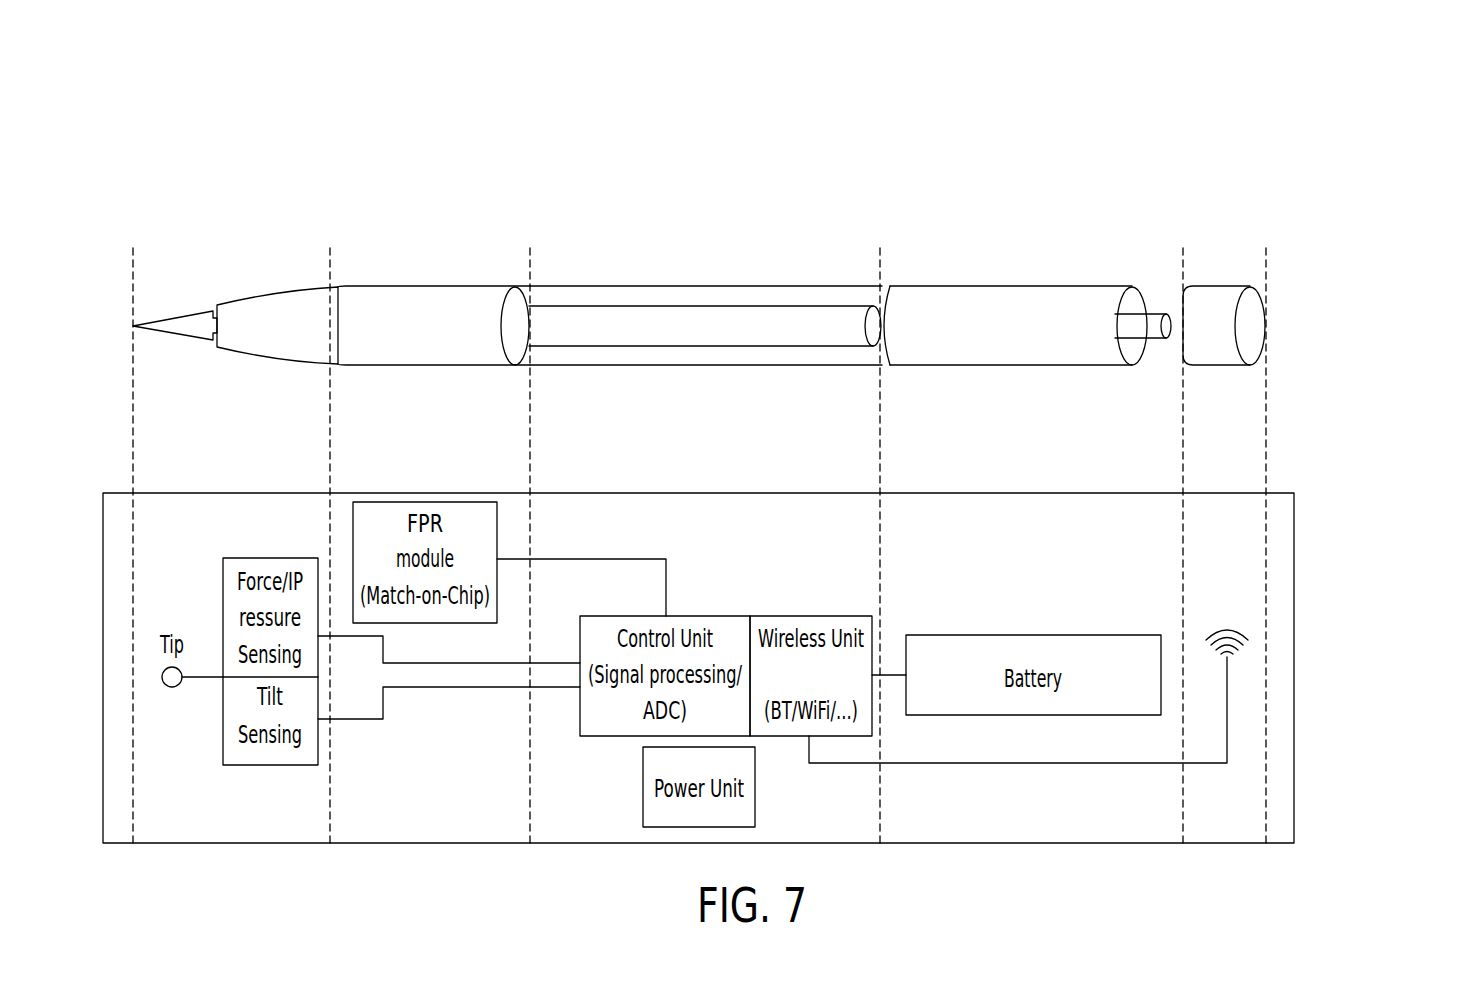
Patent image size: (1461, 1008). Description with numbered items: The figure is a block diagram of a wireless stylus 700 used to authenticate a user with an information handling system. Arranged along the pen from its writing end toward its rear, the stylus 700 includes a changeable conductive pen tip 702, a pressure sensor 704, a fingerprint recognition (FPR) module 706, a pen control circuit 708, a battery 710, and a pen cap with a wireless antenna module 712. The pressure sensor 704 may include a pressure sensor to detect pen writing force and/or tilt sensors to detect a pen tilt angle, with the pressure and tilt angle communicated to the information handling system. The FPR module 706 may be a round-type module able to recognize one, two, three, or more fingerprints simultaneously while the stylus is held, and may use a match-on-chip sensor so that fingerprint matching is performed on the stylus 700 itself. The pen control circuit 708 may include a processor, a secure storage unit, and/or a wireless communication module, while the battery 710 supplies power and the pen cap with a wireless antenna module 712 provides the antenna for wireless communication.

The stylus 700 is at (1312, 78).
The changeable conductive pen tip 702 is at (172, 305).
The pressure sensor 704 is at (278, 280).
The fingerprint recognition (FPR) module 706 is at (432, 268).
The pen control circuit 708 is at (655, 300).
The battery 710 is at (995, 382).
The pen cap with a wireless antenna module 712 is at (1240, 388).